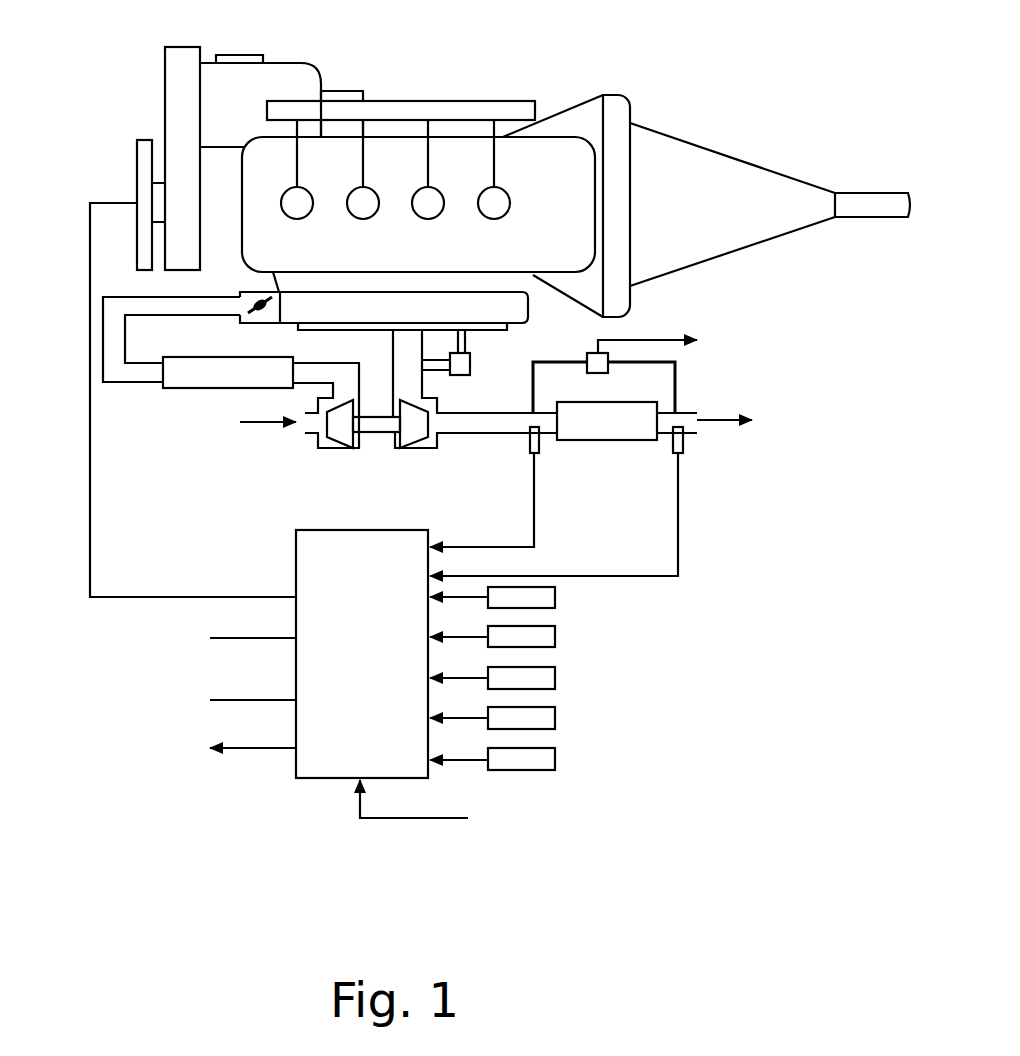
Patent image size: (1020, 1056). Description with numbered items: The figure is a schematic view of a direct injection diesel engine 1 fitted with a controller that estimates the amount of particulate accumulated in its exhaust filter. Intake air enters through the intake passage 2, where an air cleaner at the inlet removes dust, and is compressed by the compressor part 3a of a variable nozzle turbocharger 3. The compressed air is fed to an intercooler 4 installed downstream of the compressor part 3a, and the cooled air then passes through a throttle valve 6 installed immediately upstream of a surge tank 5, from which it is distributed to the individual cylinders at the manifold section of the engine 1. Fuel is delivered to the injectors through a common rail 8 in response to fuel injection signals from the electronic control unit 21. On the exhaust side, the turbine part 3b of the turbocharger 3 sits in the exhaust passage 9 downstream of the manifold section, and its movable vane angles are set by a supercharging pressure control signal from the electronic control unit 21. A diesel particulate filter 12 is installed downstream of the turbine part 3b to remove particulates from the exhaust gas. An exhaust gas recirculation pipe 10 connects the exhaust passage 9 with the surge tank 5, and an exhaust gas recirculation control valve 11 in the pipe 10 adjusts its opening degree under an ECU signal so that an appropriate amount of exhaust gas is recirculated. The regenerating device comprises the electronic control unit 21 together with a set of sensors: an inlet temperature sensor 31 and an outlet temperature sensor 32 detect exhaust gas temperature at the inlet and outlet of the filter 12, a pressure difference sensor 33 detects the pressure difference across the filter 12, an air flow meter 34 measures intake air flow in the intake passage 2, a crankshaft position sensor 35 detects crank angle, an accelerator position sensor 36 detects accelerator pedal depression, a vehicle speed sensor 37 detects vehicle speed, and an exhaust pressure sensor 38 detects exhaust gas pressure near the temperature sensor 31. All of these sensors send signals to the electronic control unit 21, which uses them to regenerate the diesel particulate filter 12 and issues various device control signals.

The diesel engine 1 is at (570, 68).
The intake passage 2 is at (90, 352).
The variable nozzle turbocharger 3 is at (350, 411).
The compressor part 3a is at (335, 448).
The turbine part 3b is at (408, 450).
The intercooler 4 is at (210, 388).
The surge tank 5 is at (530, 313).
The throttle valve 6 is at (248, 318).
The common rail 8 is at (460, 101).
The exhaust passage 9 is at (470, 434).
The exhaust gas recirculation pipe 10 is at (466, 342).
The exhaust gas recirculation control valve 11 is at (470, 374).
The diesel particulate filter 12 is at (605, 441).
The electronic control unit 21 is at (340, 530).
The inlet temperature sensor 31 is at (540, 446).
The outlet temperature sensor 32 is at (683, 446).
The pressure difference sensor 33 is at (608, 366).
The air flow meter 34 is at (555, 598).
The crankshaft position sensor 35 is at (555, 638).
The accelerator position sensor 36 is at (555, 679).
The vehicle speed sensor 37 is at (555, 719).
The exhaust pressure sensor 38 is at (555, 761).